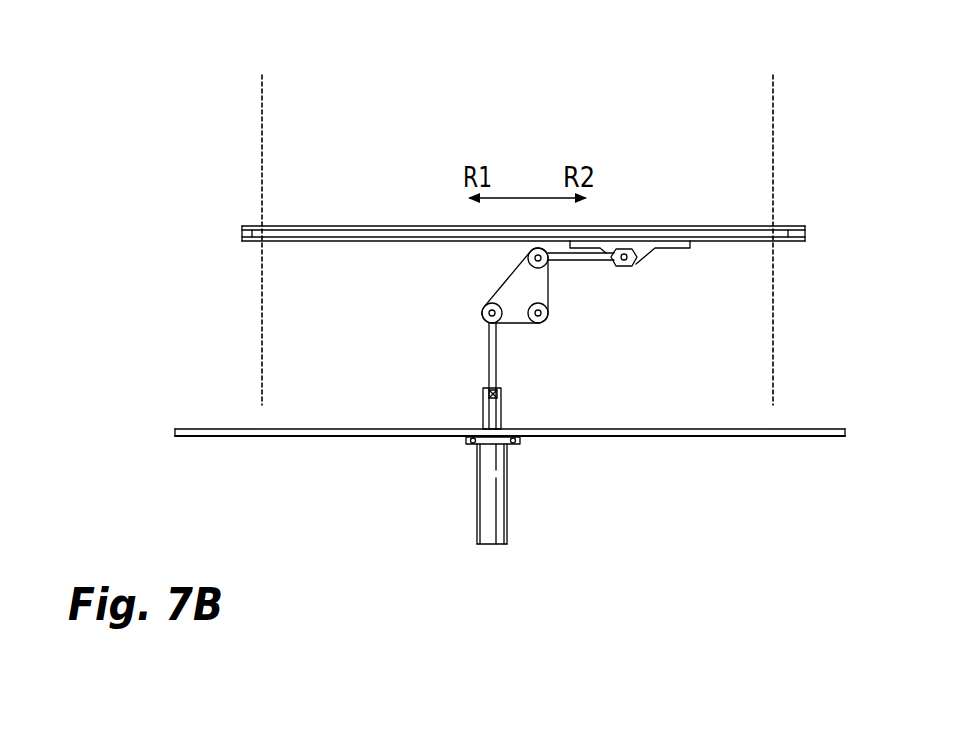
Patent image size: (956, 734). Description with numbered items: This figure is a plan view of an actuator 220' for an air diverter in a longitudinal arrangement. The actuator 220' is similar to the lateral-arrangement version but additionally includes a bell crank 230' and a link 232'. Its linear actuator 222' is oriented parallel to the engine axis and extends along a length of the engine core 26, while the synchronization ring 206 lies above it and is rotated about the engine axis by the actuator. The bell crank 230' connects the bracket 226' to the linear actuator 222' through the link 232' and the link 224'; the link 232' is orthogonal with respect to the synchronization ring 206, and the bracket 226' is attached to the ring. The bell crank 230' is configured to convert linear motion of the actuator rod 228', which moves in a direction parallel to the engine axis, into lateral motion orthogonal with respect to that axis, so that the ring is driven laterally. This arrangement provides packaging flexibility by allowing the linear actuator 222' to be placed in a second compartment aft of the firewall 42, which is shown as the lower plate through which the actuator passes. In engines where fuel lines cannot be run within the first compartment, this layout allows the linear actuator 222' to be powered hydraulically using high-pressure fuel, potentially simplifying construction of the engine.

The engine core 26 is at (641, 100).
The firewall 42 is at (645, 437).
The synchronization ring 206 is at (293, 243).
The actuator 220' is at (512, 280).
The linear actuator 222' is at (458, 490).
The link 224' is at (596, 293).
The bracket 226' is at (649, 276).
The actuator rod 228' is at (447, 398).
The bell crank 230' is at (535, 314).
The link 232' is at (447, 374).